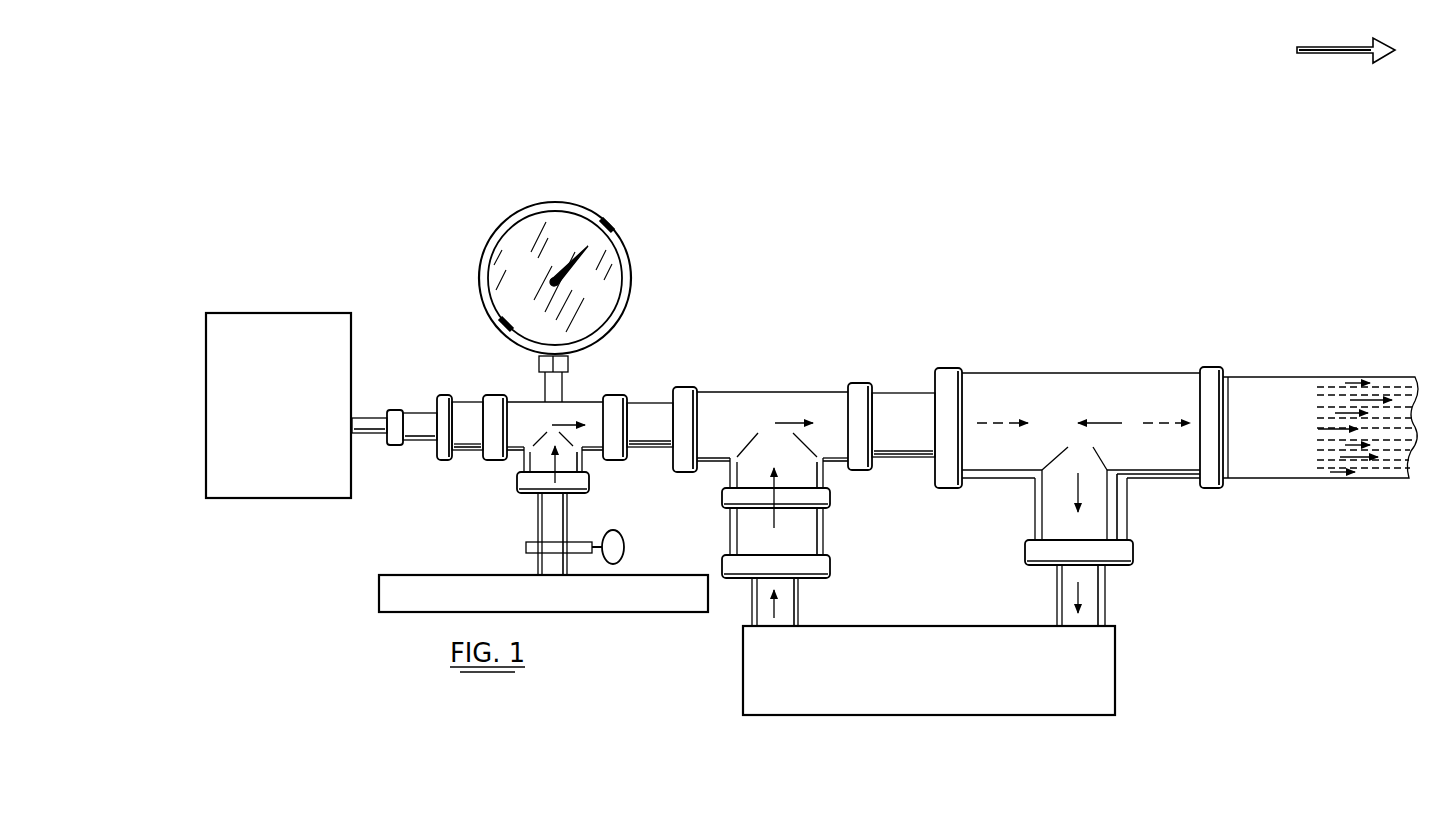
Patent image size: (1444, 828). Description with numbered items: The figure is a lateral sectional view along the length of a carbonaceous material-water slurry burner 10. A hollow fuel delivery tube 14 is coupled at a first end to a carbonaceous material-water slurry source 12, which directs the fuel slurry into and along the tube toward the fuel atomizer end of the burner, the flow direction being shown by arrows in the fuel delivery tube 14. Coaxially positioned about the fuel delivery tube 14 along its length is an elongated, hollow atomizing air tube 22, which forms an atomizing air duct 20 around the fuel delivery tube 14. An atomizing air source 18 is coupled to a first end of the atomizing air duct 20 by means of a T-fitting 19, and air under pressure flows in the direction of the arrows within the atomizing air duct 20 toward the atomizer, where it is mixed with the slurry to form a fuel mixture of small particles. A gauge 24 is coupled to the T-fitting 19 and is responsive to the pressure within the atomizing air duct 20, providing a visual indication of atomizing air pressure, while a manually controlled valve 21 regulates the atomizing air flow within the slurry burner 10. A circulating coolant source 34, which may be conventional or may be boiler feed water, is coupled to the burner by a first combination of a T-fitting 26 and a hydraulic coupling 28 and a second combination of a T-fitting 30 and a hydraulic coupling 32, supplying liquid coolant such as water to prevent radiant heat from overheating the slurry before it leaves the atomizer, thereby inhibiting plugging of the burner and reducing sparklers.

The carbonaceous material-water slurry burner 10 is at (1060, 235).
The carbonaceous material-water slurry source 12 is at (295, 484).
The fuel delivery tube 14 is at (368, 417).
The atomizing air source 18 is at (408, 603).
The T-fitting 19 is at (565, 403).
The atomizing air duct 20 is at (1312, 444).
The manually controlled valve 21 is at (625, 533).
The atomizing air tube 22 is at (1312, 400).
The gauge 24 is at (588, 215).
The T-fitting 26 is at (755, 392).
The hydraulic coupling 28 is at (823, 540).
The T-fitting 30 is at (1042, 373).
The hydraulic coupling 32 is at (1133, 552).
The circulating coolant source 34 is at (1082, 676).